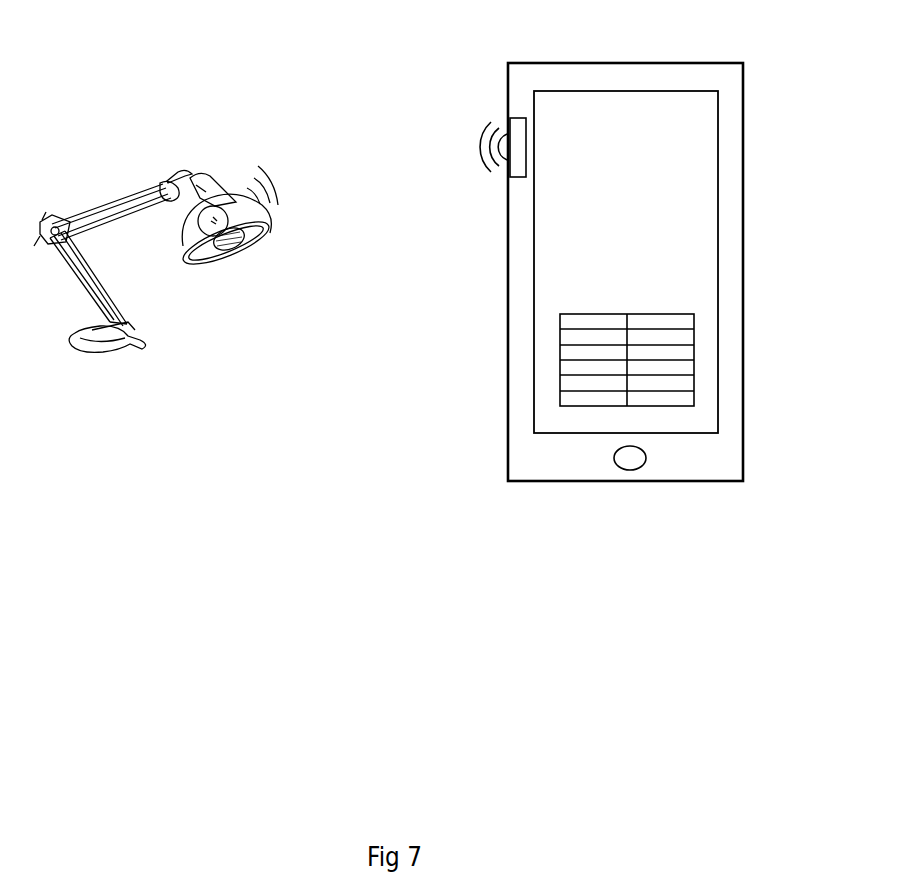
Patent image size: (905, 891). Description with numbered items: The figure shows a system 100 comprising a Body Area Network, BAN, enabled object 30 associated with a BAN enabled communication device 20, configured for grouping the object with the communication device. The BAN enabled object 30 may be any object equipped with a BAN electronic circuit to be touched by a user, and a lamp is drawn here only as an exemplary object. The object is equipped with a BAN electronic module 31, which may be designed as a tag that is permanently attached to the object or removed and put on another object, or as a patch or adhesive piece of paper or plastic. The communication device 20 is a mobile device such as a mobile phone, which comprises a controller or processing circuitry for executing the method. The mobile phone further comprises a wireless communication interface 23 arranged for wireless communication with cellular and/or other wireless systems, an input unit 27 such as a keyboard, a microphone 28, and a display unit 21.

The system 100 is at (212, 507).
The BAN enabled object 30 is at (105, 173).
The BAN electronic module 31 is at (207, 263).
The BAN enabled communication device 20 is at (618, 60).
The display unit 21 is at (705, 128).
The wireless communication interface 23 is at (510, 168).
The input unit 27 is at (697, 355).
The microphone 28 is at (628, 463).